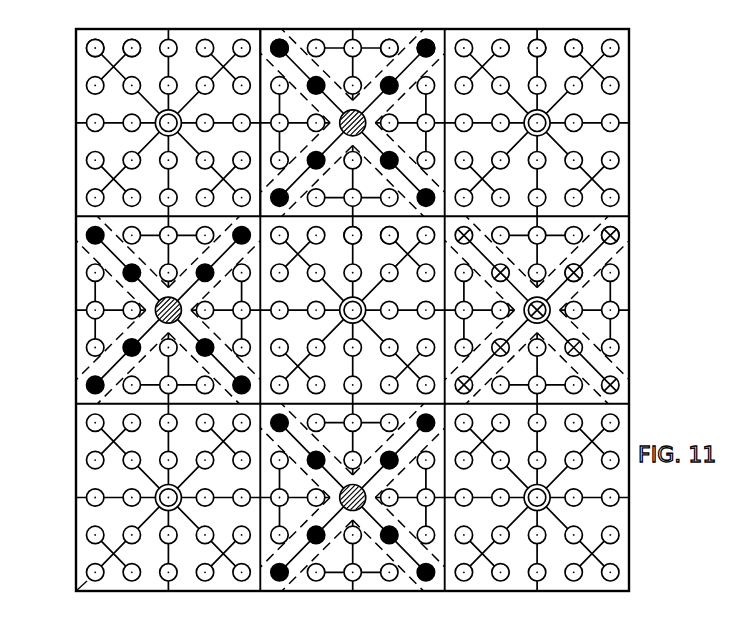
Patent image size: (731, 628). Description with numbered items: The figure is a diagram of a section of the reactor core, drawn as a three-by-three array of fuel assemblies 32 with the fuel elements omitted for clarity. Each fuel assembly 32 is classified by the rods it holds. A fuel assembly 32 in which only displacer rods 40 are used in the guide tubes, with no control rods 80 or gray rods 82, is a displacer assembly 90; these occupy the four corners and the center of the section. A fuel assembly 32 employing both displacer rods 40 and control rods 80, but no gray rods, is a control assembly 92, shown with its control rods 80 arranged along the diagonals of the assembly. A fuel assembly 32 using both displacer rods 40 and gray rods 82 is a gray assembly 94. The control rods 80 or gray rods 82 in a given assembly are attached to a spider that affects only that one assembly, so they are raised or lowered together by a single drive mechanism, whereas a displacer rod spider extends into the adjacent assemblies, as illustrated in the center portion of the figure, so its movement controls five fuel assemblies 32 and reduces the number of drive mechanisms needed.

The fuel assembly 32 is at (266, 27).
The displacer rods 40 is at (132, 40).
The control rods 80 is at (283, 41).
The gray rods 82 is at (581, 269).
The displacer assembly 90 is at (70, 106).
The control assembly 92 is at (369, 30).
The gray assembly 94 is at (635, 347).